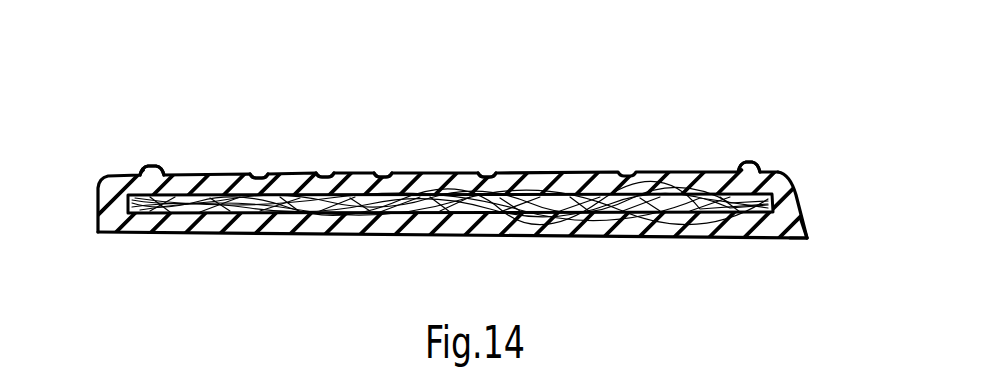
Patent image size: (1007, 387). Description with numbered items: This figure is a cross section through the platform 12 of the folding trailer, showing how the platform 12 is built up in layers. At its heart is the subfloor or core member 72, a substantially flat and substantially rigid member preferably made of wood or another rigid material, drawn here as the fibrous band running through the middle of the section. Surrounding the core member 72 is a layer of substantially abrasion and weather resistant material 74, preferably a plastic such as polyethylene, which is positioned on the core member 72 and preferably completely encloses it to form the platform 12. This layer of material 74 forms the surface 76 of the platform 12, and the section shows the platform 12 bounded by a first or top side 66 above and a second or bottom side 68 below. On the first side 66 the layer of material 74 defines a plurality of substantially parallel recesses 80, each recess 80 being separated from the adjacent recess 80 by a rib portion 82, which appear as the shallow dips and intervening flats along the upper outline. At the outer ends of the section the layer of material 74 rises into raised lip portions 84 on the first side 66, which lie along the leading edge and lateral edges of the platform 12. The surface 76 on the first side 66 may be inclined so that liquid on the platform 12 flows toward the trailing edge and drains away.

The platform 12 is at (472, 173).
The first side 66 is at (660, 158).
The second side 68 is at (663, 254).
The core member 72 is at (796, 203).
The layer of substantially abrasion and weather resistant material 74 is at (778, 170).
The surface 76 is at (806, 234).
The recesses 80 is at (328, 174).
The rib portion 82 is at (484, 173).
The raised lip portions 84 is at (146, 167).